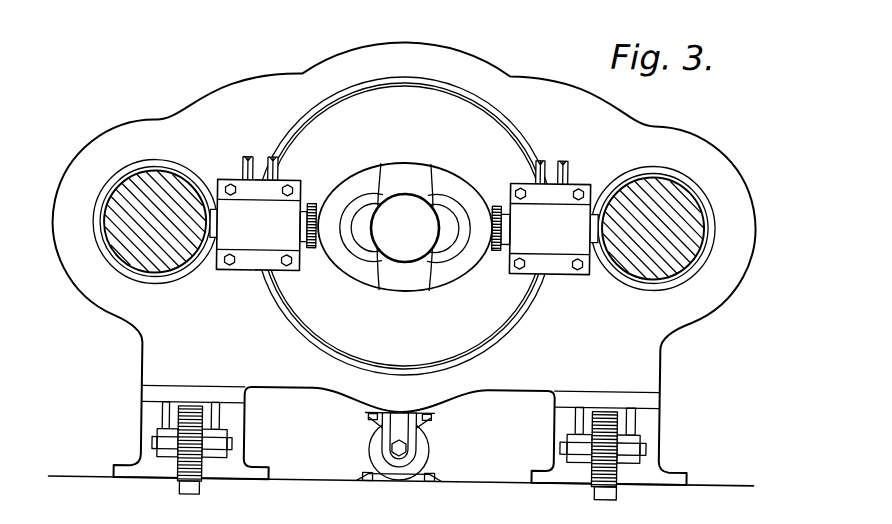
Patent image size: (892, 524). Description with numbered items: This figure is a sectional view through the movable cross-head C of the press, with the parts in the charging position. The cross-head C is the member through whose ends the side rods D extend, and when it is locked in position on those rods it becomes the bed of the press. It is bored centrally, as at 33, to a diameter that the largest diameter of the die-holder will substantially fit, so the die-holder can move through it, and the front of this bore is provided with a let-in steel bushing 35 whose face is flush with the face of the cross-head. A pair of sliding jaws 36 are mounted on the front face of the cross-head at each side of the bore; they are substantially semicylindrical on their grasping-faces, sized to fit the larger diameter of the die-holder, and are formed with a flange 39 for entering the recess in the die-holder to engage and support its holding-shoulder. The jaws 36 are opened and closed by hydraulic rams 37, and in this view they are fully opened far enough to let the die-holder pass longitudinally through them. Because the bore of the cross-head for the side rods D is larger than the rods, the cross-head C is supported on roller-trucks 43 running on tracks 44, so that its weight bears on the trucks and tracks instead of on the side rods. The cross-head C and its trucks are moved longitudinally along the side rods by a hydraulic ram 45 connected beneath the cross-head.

The movable cross-head C is at (404, 226).
The side rods D is at (160, 262).
The central bore 33 is at (405, 228).
The let-in steel bushing 35 is at (405, 196).
The sliding jaws 36 is at (404, 221).
The hydraulic rams 37 is at (404, 215).
The flange 39 is at (404, 259).
The roller-trucks 43 is at (225, 417).
The tracks 44 is at (193, 488).
The hydraulic ram 45 is at (373, 447).